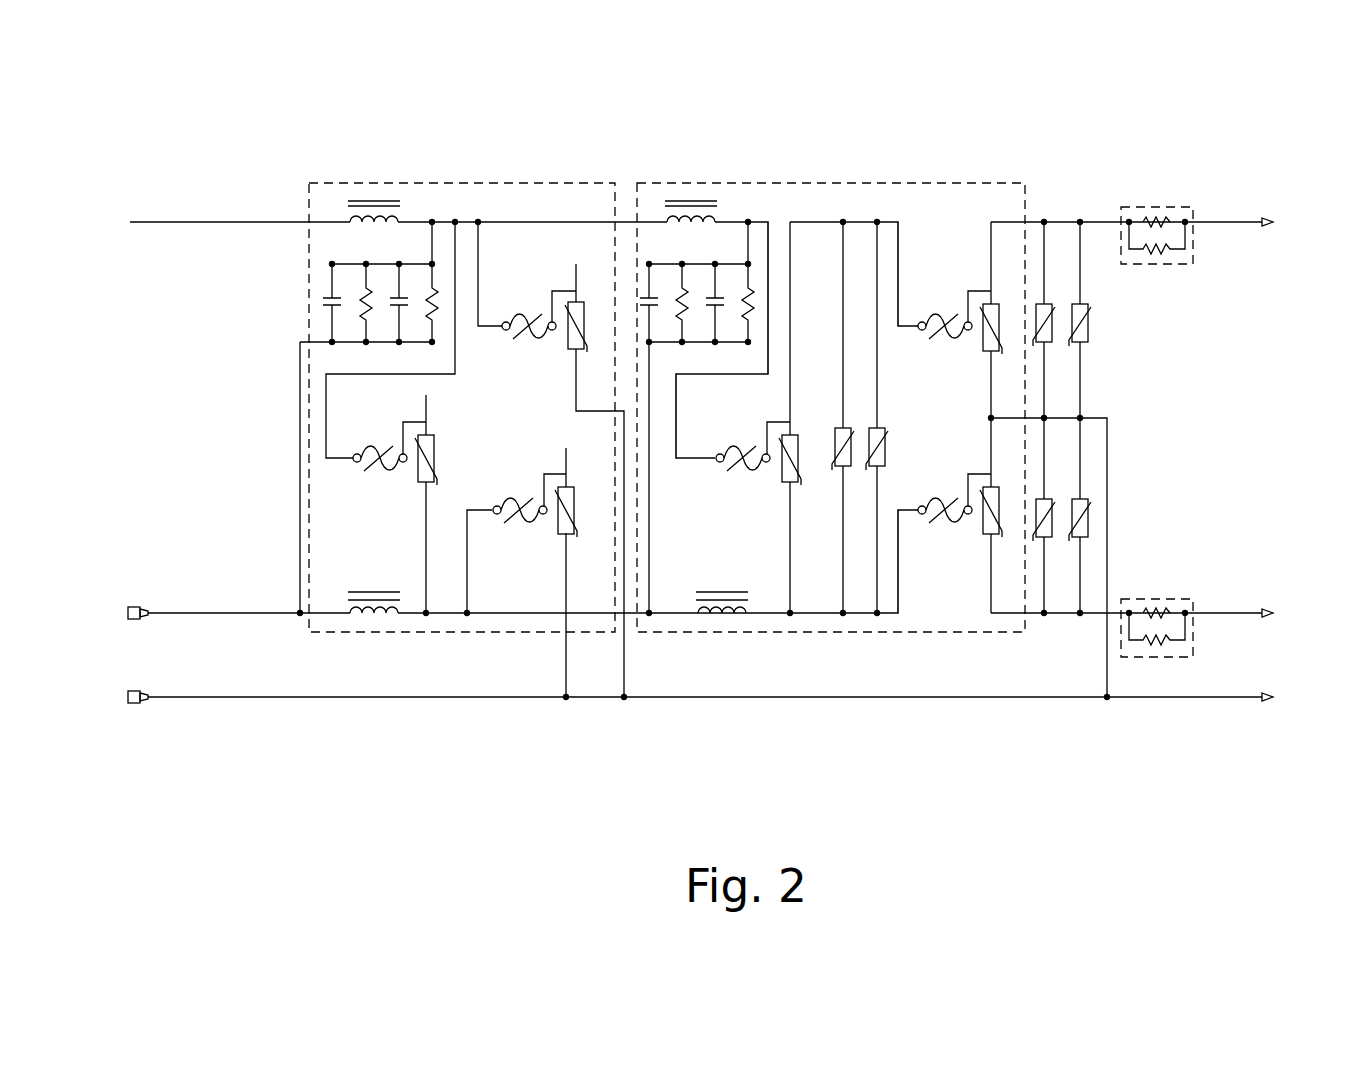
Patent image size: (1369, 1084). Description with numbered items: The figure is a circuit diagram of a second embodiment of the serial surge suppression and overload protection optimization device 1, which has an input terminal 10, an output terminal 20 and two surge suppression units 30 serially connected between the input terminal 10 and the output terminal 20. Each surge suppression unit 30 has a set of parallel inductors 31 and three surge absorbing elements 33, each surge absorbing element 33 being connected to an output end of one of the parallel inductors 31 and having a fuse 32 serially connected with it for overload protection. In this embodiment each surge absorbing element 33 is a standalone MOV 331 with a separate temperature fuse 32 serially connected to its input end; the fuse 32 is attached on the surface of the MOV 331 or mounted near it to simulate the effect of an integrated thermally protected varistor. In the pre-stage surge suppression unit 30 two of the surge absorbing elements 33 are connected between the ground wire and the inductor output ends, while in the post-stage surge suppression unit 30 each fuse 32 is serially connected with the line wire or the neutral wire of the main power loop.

The serial surge suppression and overload protection optimization device 1 is at (217, 98).
The input terminal 10 is at (125, 272).
The output terminal 20 is at (1253, 247).
The surge suppression unit 30 is at (497, 181).
The parallel inductors 31 is at (372, 190).
The fuse 32 is at (378, 472).
The surge absorbing element 33 is at (418, 484).
The MOV 331 is at (413, 530).